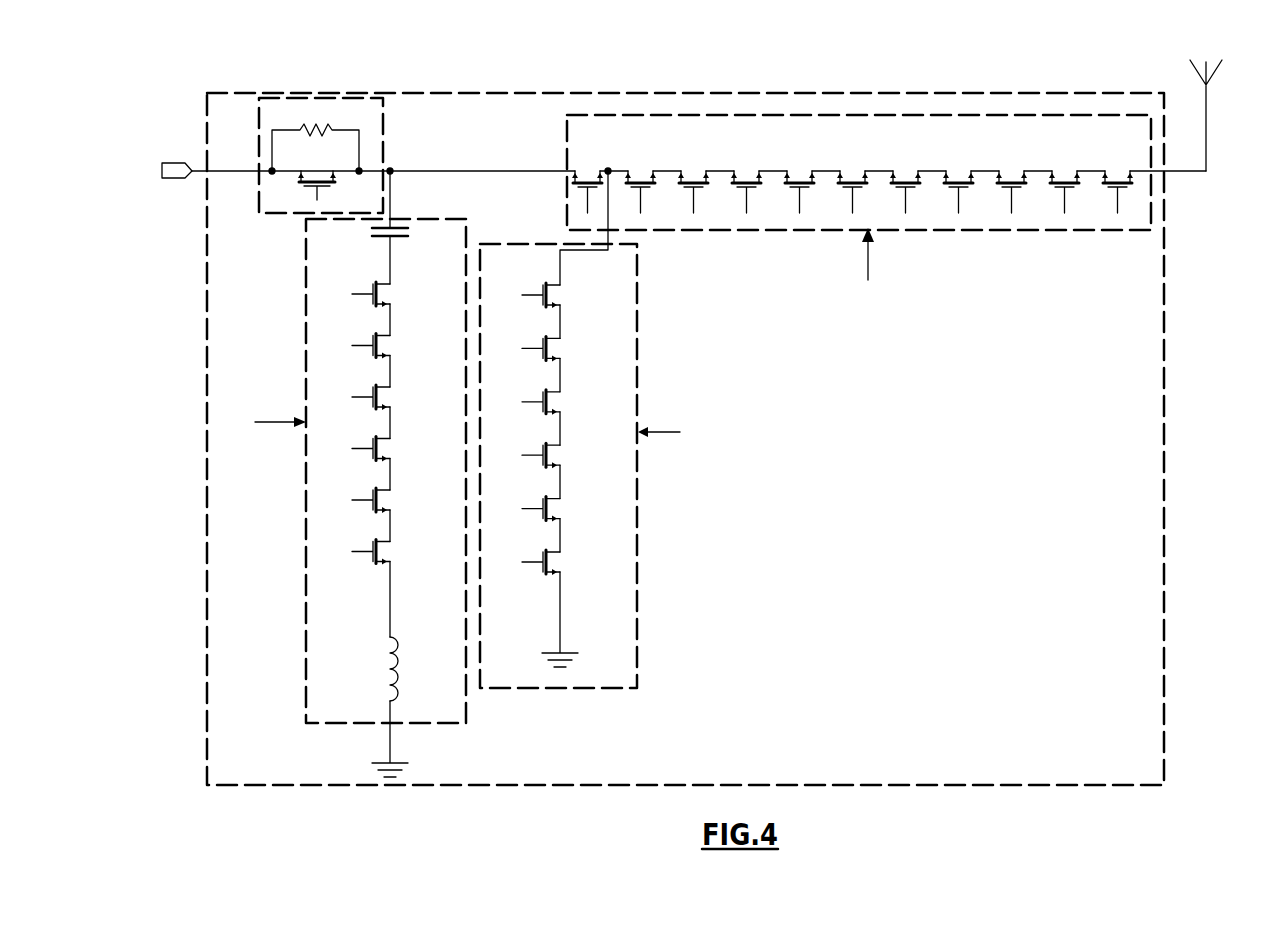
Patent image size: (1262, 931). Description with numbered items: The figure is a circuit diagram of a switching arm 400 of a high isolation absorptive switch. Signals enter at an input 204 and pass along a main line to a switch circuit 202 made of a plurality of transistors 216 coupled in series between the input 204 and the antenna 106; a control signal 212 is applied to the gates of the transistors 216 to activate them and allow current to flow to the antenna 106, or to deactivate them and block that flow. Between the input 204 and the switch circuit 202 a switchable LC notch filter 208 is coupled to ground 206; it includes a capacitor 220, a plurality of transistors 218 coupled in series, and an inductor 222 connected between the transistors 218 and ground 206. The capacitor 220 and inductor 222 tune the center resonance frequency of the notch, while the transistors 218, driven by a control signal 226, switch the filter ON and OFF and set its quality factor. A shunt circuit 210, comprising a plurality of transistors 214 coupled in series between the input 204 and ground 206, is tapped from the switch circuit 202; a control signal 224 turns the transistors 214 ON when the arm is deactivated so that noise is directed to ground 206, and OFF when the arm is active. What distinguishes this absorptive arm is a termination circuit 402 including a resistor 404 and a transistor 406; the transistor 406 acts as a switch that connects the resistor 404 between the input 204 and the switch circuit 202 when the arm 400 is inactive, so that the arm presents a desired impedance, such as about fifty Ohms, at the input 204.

The switching arm 400 is at (178, 92).
The antenna 106 is at (1208, 88).
The switch circuit 202 is at (1145, 149).
The input 204 is at (170, 203).
The ground 206 is at (392, 745).
The LC notch filter 208 is at (386, 445).
The shunt circuit 210 is at (558, 428).
The control signal 212 is at (866, 262).
The plurality of transistors 214 is at (577, 431).
The plurality of transistors 216 is at (1137, 168).
The plurality of transistors 218 is at (397, 280).
The capacitor 220 is at (406, 240).
The inductor 222 is at (398, 668).
The control signal 224 is at (668, 432).
The control signal 226 is at (280, 422).
The termination circuit 402 is at (375, 125).
The resistor 404 is at (316, 127).
The transistor 406 is at (317, 200).